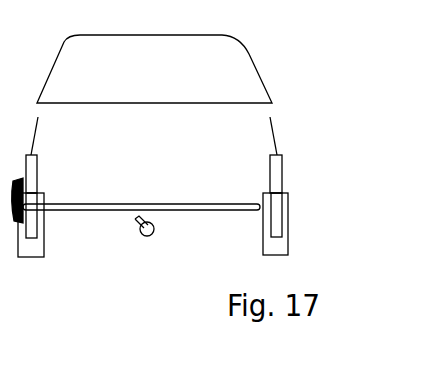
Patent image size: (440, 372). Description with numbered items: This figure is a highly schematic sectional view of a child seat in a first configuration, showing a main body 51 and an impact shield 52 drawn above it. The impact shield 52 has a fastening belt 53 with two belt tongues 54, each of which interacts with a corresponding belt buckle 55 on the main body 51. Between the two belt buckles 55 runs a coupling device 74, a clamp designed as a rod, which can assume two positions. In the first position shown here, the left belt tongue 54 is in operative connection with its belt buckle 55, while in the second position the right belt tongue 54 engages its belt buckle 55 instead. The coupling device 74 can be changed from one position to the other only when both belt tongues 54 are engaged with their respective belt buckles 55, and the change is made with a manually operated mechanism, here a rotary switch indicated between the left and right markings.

The main body 51 is at (138, 256).
The impact shield 52 is at (208, 78).
The fastening belt 53 is at (280, 150).
The belt tongue 54 is at (282, 215).
The belt buckle 55 is at (280, 250).
The coupling device 74 is at (90, 205).